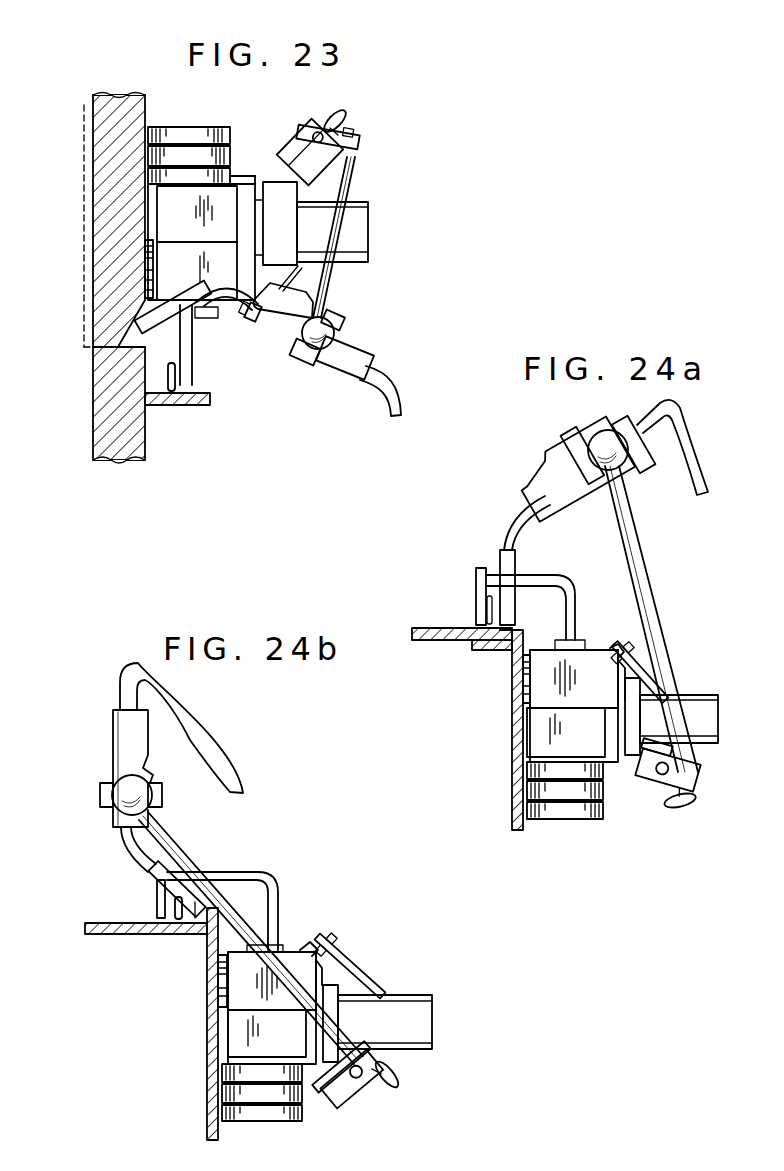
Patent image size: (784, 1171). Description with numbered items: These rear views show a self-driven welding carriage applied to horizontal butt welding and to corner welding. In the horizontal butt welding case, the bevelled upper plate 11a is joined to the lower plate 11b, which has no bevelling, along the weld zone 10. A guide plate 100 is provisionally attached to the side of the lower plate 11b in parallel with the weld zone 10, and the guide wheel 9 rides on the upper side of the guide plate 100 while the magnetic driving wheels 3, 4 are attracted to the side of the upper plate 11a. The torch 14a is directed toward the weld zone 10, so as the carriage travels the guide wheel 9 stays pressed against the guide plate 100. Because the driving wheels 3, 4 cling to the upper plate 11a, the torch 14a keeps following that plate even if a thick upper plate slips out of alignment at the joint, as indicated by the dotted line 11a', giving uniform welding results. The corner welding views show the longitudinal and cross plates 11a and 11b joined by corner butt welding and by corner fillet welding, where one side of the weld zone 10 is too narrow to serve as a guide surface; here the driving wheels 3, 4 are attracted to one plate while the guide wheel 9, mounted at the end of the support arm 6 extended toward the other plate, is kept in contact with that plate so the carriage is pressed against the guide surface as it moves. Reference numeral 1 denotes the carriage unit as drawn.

In FIG. 23, the shower head unit / mixing valve body 1 is at (235, 176).
In FIG. 24a, the shower head unit / mixing valve body 1 is at (604, 658).
In FIG. 24b, the shower head unit / mixing valve body 1 is at (301, 948).
In FIG. 23, the magnetic driving wheel 3 is at (145, 292).
In FIG. 24a, the magnetic driving wheel 3 is at (523, 702).
In FIG. 24b, the magnetic driving wheel 3 is at (217, 1003).
In FIG. 23, the magnetic driving wheel 4 is at (194, 128).
In FIG. 24a, the magnetic driving wheel 4 is at (552, 819).
In FIG. 24b, the magnetic driving wheel 4 is at (243, 1121).
In FIG. 24a, the support arm 6 is at (574, 584).
In FIG. 24b, the support arm 6 is at (280, 886).
In FIG. 23, the guide wheel 9 is at (168, 388).
In FIG. 24a, the guide wheel 9 is at (476, 592).
In FIG. 24b, the guide wheel 9 is at (168, 922).
In FIG. 23, the weld zone 10 is at (122, 345).
In FIG. 24a, the weld zone 10 is at (508, 642).
In FIG. 24b, the weld zone 10 is at (204, 936).
In FIG. 23, the upper plate 11a is at (91, 220).
In FIG. 24a, the upper plate 11a is at (496, 730).
In FIG. 24b, the upper plate 11a is at (191, 1024).
In FIG. 23, the dotted line showing deviated upper plate 11a' is at (76, 226).
In FIG. 23, the lower plate 11b is at (93, 412).
In FIG. 24a, the lower plate 11b is at (422, 640).
In FIG. 24b, the lower plate 11b is at (100, 935).
In FIG. 23, the torch 14a is at (168, 324).
In FIG. 24a, the torch 14a is at (500, 564).
In FIG. 24b, the torch 14a is at (184, 876).
In FIG. 23, the guide plate 100 is at (210, 403).